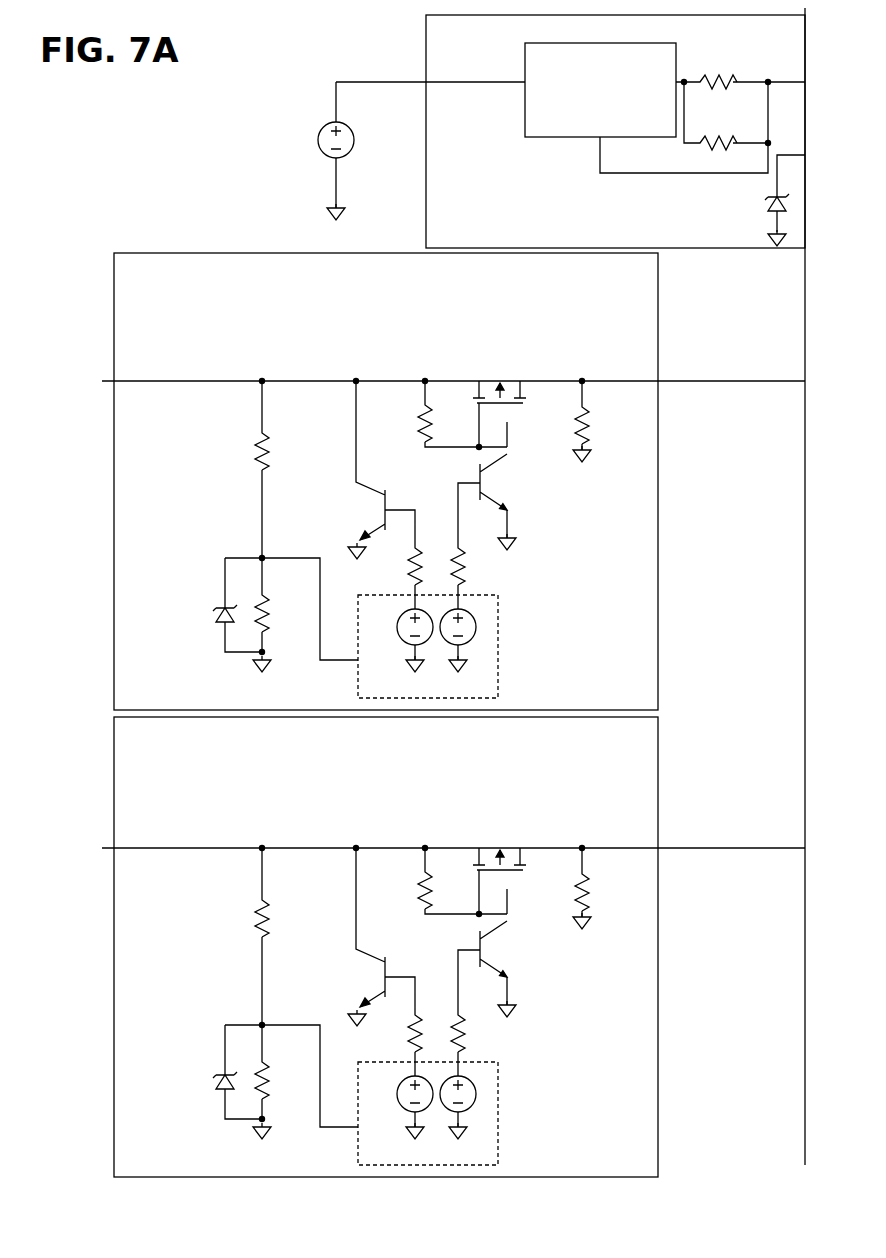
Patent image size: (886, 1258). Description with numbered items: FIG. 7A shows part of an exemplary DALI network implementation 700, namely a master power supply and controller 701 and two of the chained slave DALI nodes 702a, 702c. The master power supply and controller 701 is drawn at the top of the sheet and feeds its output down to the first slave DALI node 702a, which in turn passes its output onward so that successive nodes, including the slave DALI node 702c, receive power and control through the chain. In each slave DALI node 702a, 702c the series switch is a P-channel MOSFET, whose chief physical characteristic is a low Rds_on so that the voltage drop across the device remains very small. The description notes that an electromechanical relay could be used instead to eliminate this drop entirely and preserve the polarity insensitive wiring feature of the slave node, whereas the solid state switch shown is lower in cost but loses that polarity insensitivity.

The DALI network implementation 700 is at (435, 592).
The master power supply and controller 701 is at (615, 131).
The slave DALI node 702a is at (426, 481).
The slave DALI node 702c is at (421, 947).